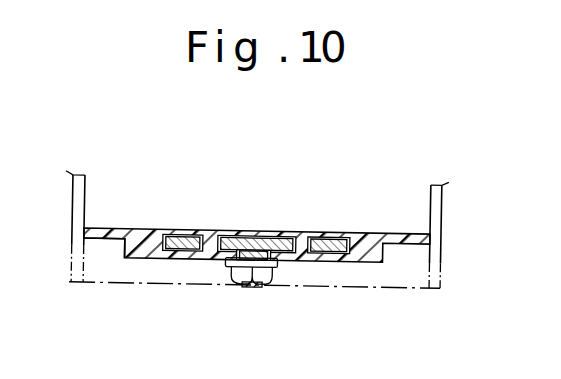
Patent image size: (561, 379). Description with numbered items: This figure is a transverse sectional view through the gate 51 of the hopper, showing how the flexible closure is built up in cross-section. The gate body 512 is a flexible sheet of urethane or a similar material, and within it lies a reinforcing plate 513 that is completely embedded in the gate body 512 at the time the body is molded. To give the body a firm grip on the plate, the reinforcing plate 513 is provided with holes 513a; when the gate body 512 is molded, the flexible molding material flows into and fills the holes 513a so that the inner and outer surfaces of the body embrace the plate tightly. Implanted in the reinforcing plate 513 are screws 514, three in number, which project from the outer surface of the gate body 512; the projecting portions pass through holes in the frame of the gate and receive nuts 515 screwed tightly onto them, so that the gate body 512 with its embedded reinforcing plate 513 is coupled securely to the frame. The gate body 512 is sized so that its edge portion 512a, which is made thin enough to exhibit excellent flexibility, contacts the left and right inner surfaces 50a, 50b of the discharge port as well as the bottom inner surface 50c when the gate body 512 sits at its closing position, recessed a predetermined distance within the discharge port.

The left inner surface 50a is at (84, 222).
The right inner surface 50b is at (429, 181).
The bottom inner surface 50c is at (354, 275).
The gate 51 is at (326, 216).
The gate body 512 is at (392, 231).
The edge portion 512a is at (100, 238).
The reinforcing plate 513 is at (182, 234).
The holes 513a is at (300, 231).
The screws 514 is at (248, 283).
The nuts 515 is at (271, 280).